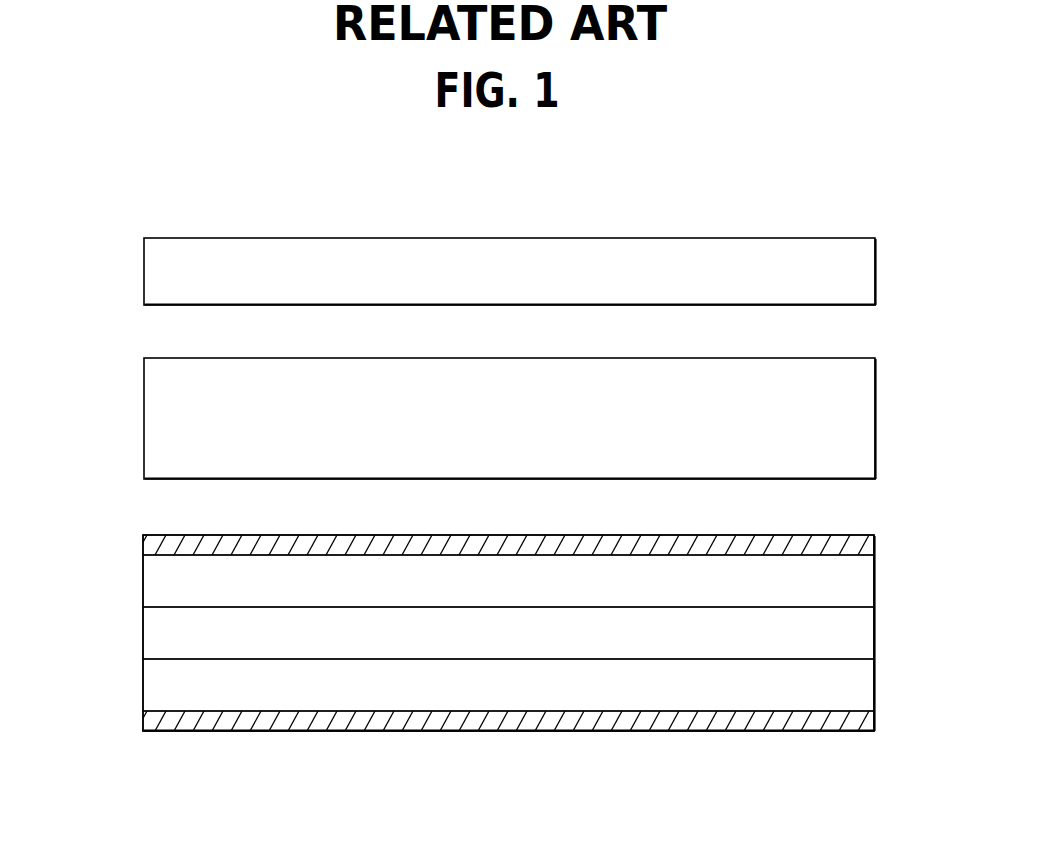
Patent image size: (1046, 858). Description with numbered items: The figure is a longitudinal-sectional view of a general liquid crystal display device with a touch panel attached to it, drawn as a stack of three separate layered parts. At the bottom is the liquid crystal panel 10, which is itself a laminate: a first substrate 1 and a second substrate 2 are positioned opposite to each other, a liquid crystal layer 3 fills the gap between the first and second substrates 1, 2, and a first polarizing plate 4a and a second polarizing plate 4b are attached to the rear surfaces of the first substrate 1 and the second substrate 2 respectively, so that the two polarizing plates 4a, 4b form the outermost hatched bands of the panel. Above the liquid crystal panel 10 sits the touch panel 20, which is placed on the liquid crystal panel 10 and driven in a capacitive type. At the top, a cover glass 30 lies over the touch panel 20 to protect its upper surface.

The cover glass 30 is at (150, 272).
The touch panel 20 is at (150, 419).
The liquid crystal panel 10 is at (892, 535).
The second polarizing plate 4b is at (148, 544).
The second substrate 2 is at (148, 582).
The liquid crystal layer 3 is at (148, 632).
The first substrate 1 is at (148, 682).
The first polarizing plate 4a is at (148, 718).